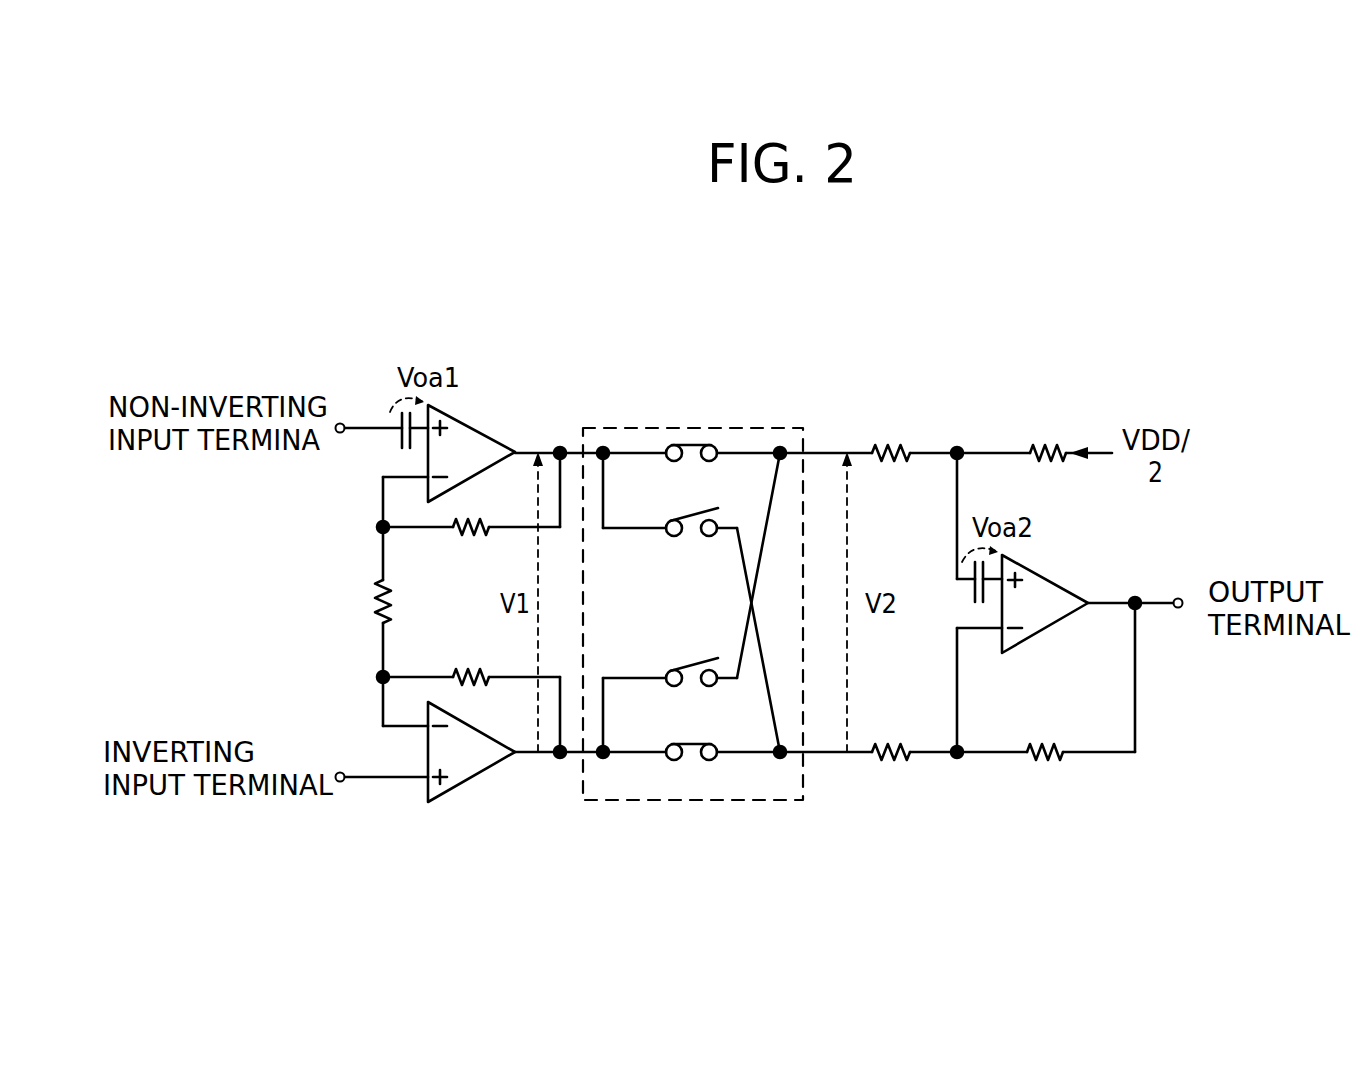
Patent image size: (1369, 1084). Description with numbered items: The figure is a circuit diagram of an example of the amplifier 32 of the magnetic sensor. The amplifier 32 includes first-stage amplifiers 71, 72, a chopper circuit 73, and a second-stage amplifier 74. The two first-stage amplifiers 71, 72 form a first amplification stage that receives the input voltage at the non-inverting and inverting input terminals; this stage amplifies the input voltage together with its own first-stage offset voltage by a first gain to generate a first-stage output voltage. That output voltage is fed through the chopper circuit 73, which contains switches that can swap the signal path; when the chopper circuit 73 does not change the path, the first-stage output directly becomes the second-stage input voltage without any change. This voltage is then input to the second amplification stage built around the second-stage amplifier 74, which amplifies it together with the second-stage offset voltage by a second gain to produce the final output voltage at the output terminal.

The amplifier 32 is at (693, 539).
The first-stage amplifier 71 is at (472, 422).
The first-stage amplifier 72 is at (473, 777).
The chopper circuit 73 is at (693, 378).
The second-stage amplifier 74 is at (1047, 572).